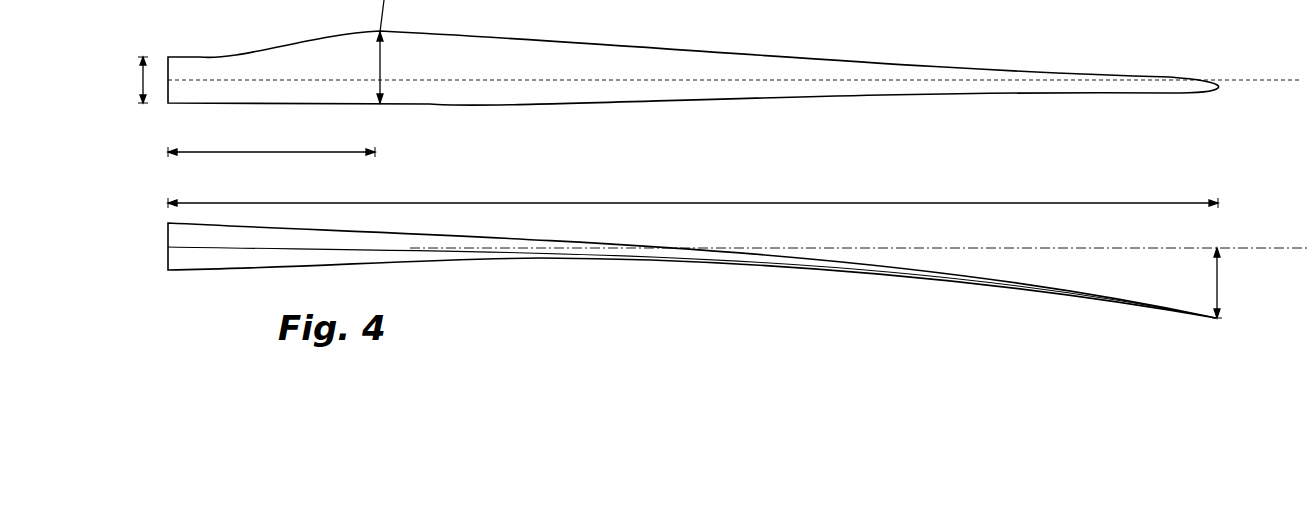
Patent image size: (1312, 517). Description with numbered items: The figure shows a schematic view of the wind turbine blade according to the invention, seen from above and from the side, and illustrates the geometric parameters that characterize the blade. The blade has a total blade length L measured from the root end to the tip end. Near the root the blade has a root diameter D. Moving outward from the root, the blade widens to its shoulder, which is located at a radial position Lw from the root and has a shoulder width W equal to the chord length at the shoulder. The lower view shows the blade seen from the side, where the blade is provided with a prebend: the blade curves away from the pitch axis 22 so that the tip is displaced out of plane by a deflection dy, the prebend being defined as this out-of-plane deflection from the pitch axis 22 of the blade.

The pitch axis 22 is at (585, 80).
The root diameter D is at (133, 80).
The shoulder width W is at (393, 67).
The shoulder position Lw is at (271, 140).
The total blade length L is at (693, 191).
The prebend dy is at (1232, 283).